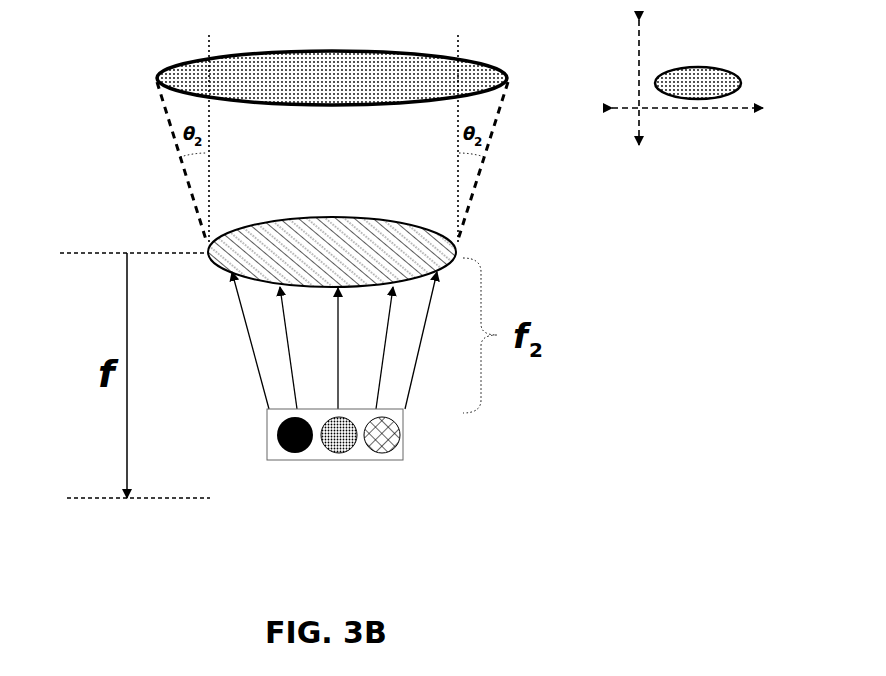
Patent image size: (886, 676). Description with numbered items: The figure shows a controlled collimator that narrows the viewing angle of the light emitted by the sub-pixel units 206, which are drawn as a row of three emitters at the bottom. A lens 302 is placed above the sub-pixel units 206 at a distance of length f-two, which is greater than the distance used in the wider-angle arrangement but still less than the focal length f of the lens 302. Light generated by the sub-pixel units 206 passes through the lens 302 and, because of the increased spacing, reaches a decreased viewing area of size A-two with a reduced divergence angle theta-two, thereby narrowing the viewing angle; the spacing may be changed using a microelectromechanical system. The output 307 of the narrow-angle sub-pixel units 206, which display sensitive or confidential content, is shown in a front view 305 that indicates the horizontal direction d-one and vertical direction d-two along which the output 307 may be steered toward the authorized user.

The output 307 is at (307, 49).
The lens 302 is at (352, 262).
The front view 305 is at (718, 44).
The sub-pixel units 206 is at (403, 450).